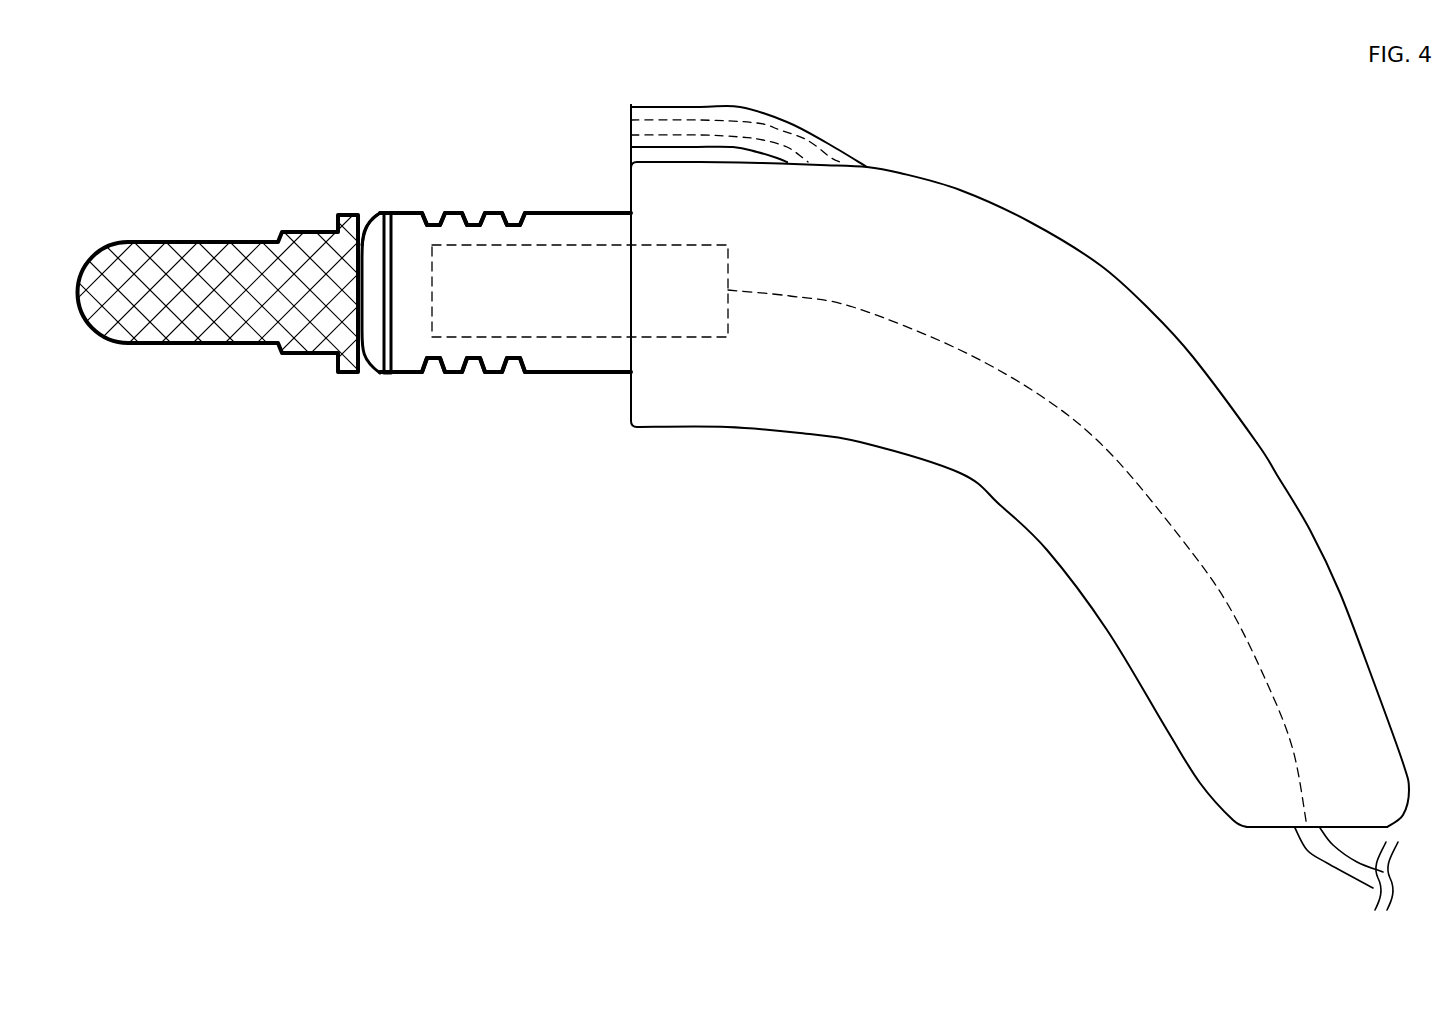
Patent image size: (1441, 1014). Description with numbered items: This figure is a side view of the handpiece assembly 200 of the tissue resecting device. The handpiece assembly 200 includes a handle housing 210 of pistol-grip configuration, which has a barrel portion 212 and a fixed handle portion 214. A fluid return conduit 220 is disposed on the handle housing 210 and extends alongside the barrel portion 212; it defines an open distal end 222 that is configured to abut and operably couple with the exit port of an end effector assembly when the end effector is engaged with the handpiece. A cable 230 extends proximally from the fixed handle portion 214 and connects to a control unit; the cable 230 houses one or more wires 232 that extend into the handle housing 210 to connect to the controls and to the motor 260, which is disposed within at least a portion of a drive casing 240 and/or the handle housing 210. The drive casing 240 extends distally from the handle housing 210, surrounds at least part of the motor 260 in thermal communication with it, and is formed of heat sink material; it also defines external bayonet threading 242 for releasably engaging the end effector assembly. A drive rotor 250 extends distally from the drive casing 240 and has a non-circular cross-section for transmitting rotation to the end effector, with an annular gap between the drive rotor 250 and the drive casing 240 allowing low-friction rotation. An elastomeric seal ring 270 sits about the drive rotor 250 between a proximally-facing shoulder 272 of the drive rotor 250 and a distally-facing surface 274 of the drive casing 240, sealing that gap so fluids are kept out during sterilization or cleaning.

The handpiece assembly 200 is at (664, 580).
The handle housing 210 is at (1070, 287).
The barrel portion 212 is at (927, 222).
The fixed handle portion 214 is at (1317, 618).
The fluid return conduit 220 is at (697, 113).
The open distal end 222 is at (628, 112).
The cable 230 is at (1342, 867).
The wires 232 is at (1185, 533).
The drive casing 240 is at (560, 357).
The external bayonet threading 242 is at (473, 360).
The drive rotor 250 is at (198, 308).
The motor 260 is at (688, 337).
The seal ring 270 is at (377, 237).
The proximally-facing shoulder 272 is at (367, 370).
The distally-facing surface 274 is at (385, 333).